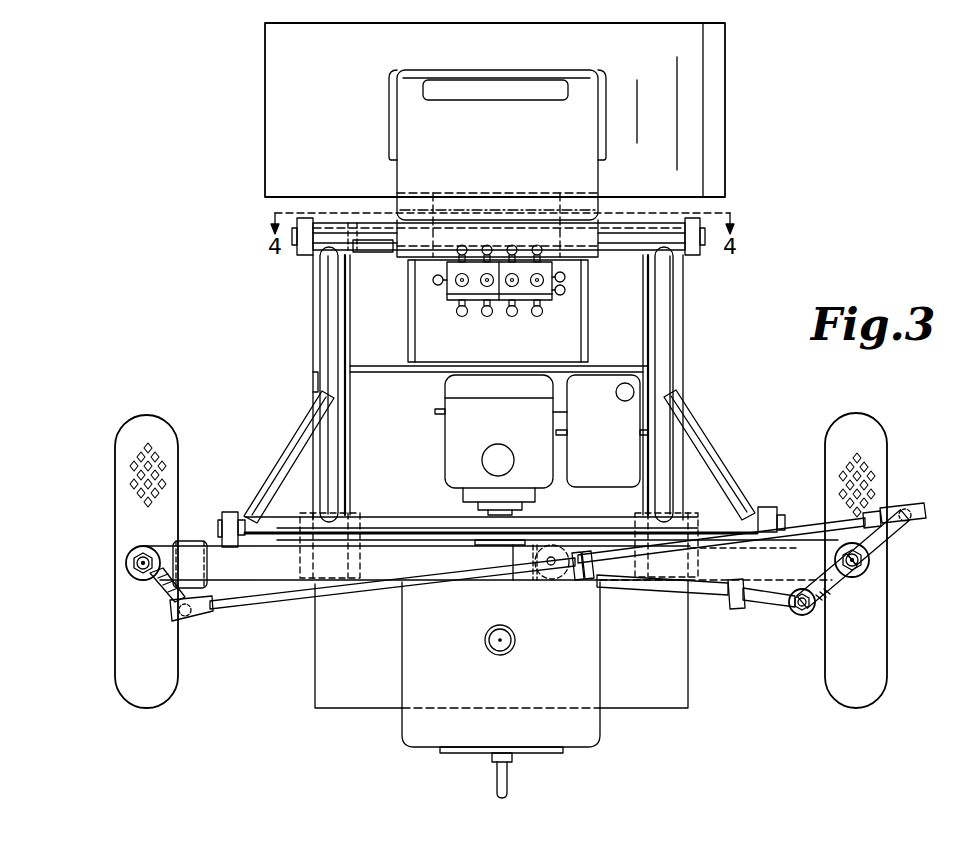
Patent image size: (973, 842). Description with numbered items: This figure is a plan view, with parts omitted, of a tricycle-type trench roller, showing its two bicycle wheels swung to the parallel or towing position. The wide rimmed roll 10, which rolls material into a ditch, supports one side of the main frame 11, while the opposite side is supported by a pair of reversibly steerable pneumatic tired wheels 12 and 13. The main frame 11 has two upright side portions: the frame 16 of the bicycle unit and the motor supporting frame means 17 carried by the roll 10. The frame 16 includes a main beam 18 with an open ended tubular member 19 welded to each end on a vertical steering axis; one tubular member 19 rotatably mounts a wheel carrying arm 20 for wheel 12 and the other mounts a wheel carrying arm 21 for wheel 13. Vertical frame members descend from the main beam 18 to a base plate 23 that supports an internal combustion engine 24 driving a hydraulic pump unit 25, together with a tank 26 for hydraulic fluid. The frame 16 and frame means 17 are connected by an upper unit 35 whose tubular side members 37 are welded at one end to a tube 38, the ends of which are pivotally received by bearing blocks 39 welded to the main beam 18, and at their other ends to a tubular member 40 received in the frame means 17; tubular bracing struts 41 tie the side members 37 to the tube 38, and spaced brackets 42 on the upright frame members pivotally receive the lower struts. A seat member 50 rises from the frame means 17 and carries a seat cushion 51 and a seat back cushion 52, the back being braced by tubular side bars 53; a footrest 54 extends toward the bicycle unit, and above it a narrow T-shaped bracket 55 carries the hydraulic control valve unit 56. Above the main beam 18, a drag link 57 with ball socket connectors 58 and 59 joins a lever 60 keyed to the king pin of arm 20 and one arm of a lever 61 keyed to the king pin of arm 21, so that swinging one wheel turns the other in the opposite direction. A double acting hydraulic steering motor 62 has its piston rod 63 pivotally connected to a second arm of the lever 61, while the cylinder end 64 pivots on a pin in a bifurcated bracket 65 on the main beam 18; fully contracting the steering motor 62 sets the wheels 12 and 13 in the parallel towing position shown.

The wide rimmed roll 10 is at (277, 106).
The main frame 11 is at (304, 331).
The pneumatic tired wheel 12 is at (127, 652).
The pneumatic tired wheel 13 is at (880, 647).
The frame of the bicycle unit 16 is at (267, 600).
The motor supporting frame means 17 is at (703, 261).
The main beam 18 is at (490, 560).
The tubular member 19 is at (126, 566).
The wheel carrying arm 20 is at (187, 540).
The wheel carrying arm 21 is at (812, 591).
The base plate 23 is at (678, 672).
The internal combustion engine 24 is at (592, 732).
The hydraulic pump unit 25 is at (501, 445).
The tank 26 is at (607, 431).
The upper unit 35 is at (693, 305).
The tubular side member 37 is at (325, 352).
The tube 38 is at (410, 520).
The bearing block 39 is at (229, 512).
The tubular member 40 is at (371, 246).
The tubular bracing strut 41 is at (293, 452).
The bracket 42 is at (328, 510).
The seat member 50 is at (588, 244).
The seat cushion 51 is at (584, 170).
The seat back cushion 52 is at (505, 90).
The tubular side bar 53 is at (391, 125).
The footrest 54 is at (498, 311).
The bracket 55 is at (546, 297).
The hydraulic control valve unit 56 is at (449, 311).
The drag link 57 is at (798, 528).
The ball socket connector 58 is at (210, 612).
The ball socket connector 59 is at (908, 508).
The lever 60 is at (160, 590).
The lever 61 is at (893, 532).
The steering motor 62 is at (716, 594).
The piston rod 63 is at (778, 604).
The cylinder end 64 is at (568, 581).
The bifurcated bracket 65 is at (538, 581).